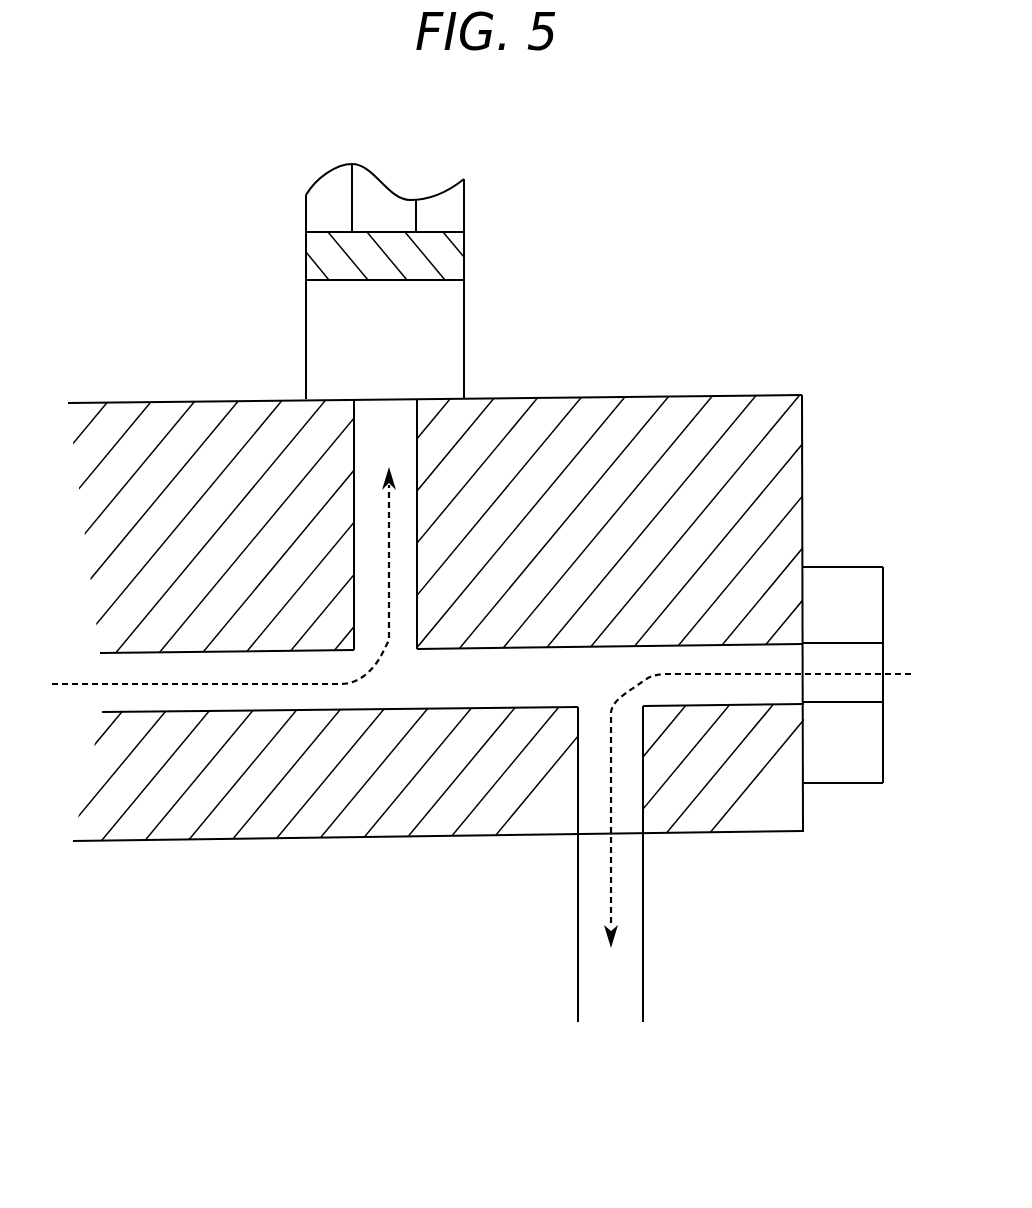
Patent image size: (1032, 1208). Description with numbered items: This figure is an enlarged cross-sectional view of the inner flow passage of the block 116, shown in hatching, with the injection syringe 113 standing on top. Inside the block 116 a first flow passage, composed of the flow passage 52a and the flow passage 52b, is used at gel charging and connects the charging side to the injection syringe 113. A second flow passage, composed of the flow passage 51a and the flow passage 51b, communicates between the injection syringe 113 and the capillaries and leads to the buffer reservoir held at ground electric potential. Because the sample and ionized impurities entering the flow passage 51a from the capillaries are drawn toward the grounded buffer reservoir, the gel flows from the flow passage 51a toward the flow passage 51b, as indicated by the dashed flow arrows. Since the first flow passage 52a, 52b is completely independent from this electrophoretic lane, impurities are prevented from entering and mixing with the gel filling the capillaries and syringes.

The injection syringe 113 is at (466, 318).
The block 116 is at (806, 470).
The flow passage 52a is at (211, 640).
The flow passage 52b is at (428, 548).
The flow passage 51a is at (647, 632).
The flow passage 51b is at (565, 794).